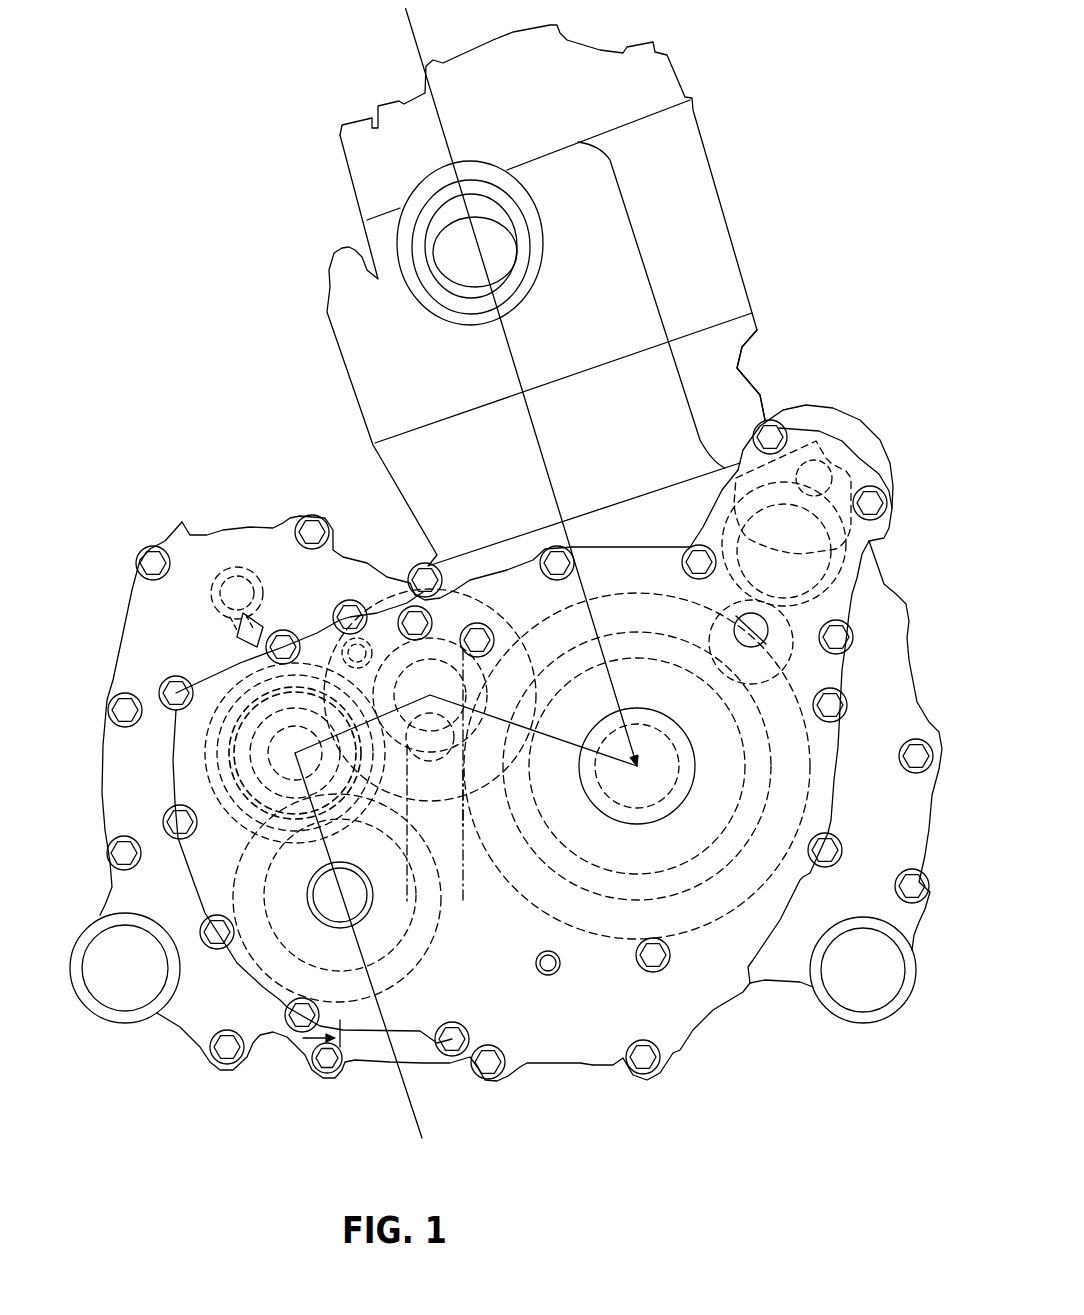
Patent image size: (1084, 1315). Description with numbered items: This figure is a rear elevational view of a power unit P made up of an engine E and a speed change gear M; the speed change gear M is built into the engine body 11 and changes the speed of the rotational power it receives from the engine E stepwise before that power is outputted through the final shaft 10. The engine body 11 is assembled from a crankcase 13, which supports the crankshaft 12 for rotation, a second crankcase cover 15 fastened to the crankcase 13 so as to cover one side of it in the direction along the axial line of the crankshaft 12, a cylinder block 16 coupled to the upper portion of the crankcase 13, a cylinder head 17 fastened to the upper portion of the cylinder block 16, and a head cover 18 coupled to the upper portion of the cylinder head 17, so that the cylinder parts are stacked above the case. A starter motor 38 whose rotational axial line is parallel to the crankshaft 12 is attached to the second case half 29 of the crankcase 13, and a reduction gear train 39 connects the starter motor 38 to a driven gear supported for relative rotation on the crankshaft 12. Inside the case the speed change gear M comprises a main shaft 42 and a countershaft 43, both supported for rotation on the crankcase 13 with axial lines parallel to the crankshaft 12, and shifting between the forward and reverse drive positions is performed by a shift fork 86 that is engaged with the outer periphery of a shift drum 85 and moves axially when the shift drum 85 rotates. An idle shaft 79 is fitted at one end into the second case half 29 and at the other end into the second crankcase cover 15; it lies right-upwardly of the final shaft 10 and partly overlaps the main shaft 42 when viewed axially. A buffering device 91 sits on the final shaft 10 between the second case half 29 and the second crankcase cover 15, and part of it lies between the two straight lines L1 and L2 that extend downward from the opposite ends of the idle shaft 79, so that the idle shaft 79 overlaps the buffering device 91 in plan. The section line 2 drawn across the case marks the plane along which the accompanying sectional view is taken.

The section line 2- 2 is at (398, 13).
The final shaft 10 is at (320, 922).
The engine body 11 is at (890, 560).
The crankshaft 12 is at (685, 762).
The crankcase 13 is at (892, 810).
The second crankcase cover 15 is at (631, 565).
The cylinder block 16 is at (737, 383).
The cylinder head 17 is at (712, 250).
The head cover 18 is at (657, 80).
The second case half 29 is at (778, 973).
The starter motor 38 is at (848, 425).
The reduction gear train 39 is at (832, 593).
The main shaft 42 is at (452, 660).
The countershaft 43 is at (232, 776).
The idle shaft 79 is at (498, 790).
The shift drum 85 is at (237, 567).
The shift fork 86 is at (240, 645).
The buffering device 91 is at (400, 955).
The engine E is at (720, 168).
The speed change gear M is at (364, 590).
The power unit P is at (705, 1052).
The straight line L1 is at (403, 890).
The straight line L2 is at (463, 882).